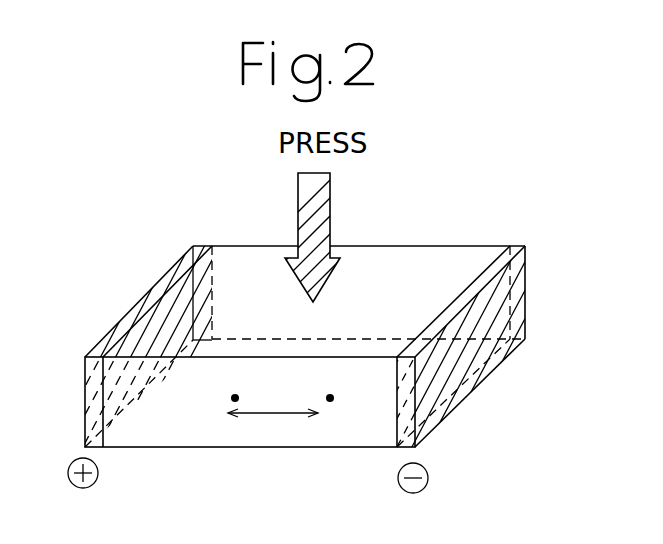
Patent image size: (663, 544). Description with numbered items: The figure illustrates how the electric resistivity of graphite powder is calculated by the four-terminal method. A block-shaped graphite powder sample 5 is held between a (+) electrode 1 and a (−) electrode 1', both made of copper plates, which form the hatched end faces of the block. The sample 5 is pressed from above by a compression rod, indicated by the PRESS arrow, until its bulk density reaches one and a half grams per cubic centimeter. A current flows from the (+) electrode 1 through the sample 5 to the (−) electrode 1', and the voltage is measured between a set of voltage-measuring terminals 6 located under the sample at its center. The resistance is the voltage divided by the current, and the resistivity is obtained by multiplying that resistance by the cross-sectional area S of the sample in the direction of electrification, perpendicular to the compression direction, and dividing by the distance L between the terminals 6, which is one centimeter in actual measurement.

The (+) electrode 1 is at (154, 352).
The (−) electrode 1' is at (454, 352).
The graphite powder sample 5 is at (445, 260).
The voltage-measuring terminals 6 is at (330, 398).
The cross-sectional area S is at (459, 359).
The distance between terminals L is at (273, 399).